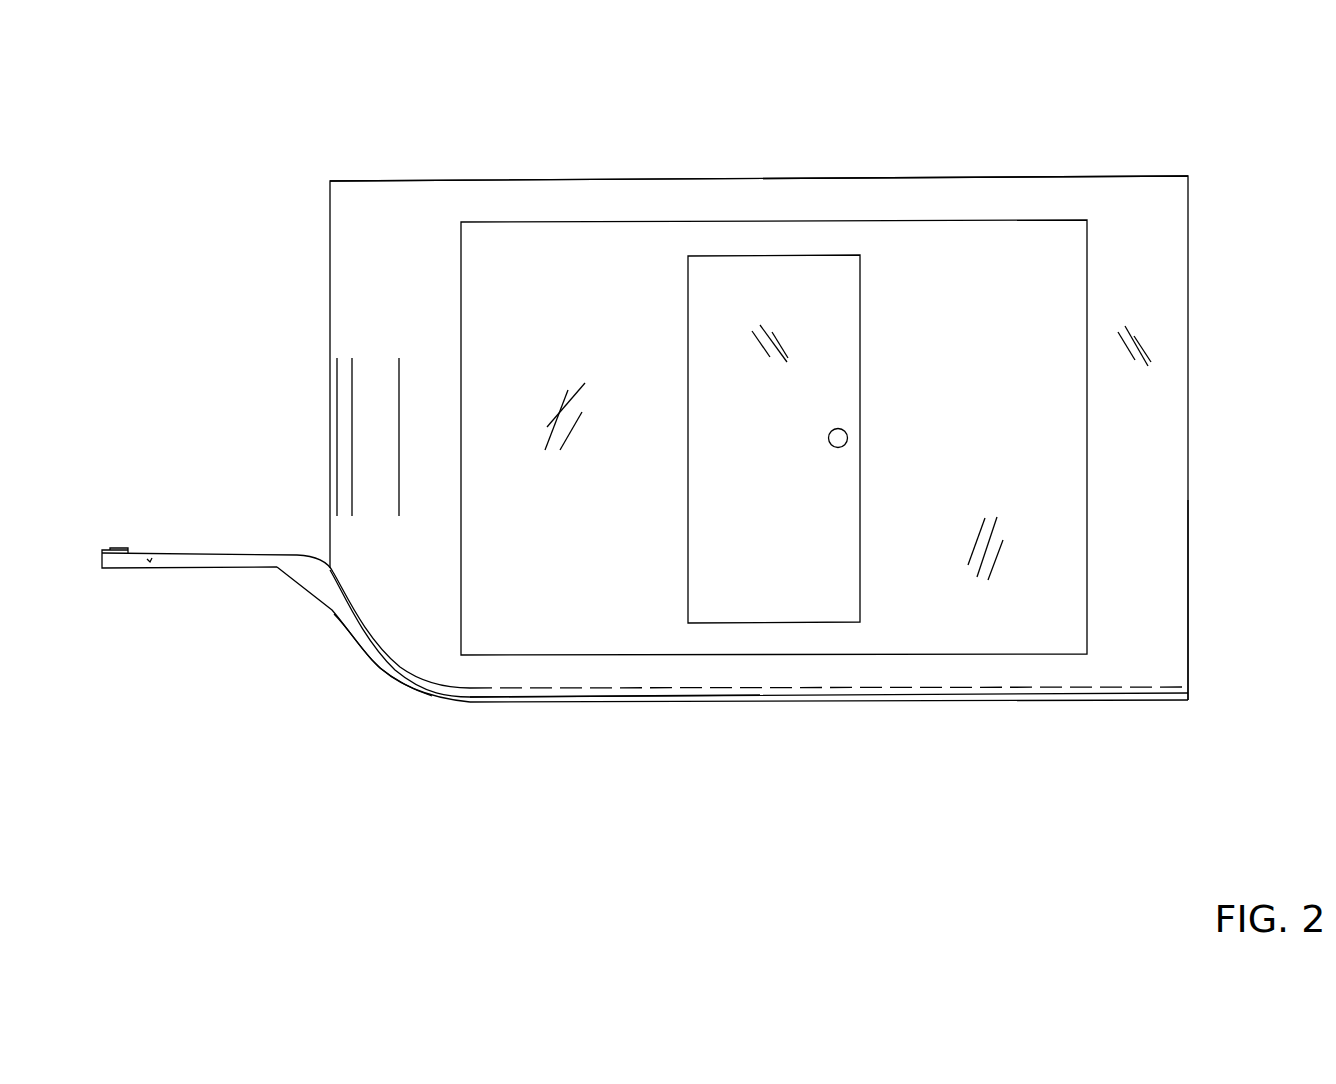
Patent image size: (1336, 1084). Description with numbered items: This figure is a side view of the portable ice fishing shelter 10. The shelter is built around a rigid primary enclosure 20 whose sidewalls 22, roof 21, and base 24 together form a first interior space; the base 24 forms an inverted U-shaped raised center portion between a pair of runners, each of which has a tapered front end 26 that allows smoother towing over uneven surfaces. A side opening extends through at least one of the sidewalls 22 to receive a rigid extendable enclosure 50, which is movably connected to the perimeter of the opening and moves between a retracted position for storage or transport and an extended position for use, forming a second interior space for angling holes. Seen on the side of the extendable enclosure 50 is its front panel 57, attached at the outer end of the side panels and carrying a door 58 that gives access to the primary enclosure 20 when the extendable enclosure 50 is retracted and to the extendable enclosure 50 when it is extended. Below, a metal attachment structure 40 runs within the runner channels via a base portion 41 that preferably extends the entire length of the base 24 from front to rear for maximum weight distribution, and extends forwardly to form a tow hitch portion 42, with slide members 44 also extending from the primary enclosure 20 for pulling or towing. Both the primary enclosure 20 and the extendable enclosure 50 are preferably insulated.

The portable ice fishing shelter 10 is at (180, 148).
The primary enclosure 20 is at (1190, 450).
The roof 21 is at (970, 178).
The sidewalls 22 is at (1123, 584).
The base 24 is at (1146, 673).
The tapered front end 26 is at (363, 657).
The attachment structure 40 is at (277, 553).
The base portion 41 is at (820, 688).
The tow hitch portion 42 is at (302, 572).
The slide members 44 is at (630, 700).
The extendable enclosure 50 is at (1087, 320).
The front panel 57 is at (573, 262).
The door 58 is at (770, 290).